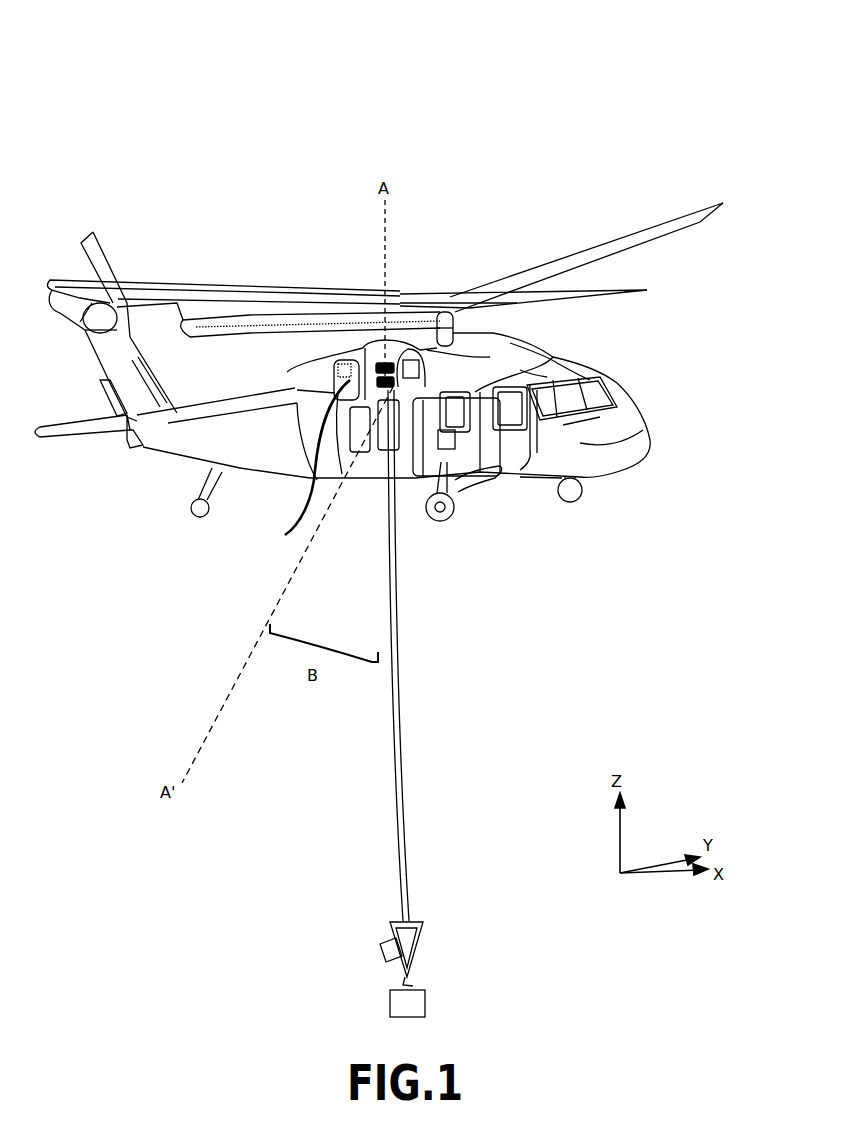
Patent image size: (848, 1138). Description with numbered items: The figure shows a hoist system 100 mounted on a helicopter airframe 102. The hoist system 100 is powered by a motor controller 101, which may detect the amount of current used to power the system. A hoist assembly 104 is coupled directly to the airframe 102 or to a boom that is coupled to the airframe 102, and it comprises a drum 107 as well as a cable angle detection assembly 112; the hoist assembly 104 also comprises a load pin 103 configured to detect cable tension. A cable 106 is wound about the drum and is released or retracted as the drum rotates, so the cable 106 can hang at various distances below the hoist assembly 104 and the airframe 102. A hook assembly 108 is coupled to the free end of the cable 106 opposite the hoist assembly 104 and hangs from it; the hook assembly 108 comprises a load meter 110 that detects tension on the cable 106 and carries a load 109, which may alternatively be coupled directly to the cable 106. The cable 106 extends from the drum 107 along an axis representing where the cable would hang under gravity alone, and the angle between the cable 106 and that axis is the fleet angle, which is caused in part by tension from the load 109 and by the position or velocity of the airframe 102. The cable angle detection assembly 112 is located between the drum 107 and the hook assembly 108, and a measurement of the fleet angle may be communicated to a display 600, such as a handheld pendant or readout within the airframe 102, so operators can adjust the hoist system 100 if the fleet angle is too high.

The hoist system 100 is at (97, 118).
The motor controller 101 is at (333, 368).
The airframe 102 is at (553, 355).
The load pin 103 is at (420, 367).
The hoist assembly 104 is at (302, 471).
The cable 106 is at (403, 657).
The drum 107 is at (378, 364).
The hook assembly 108 is at (423, 925).
The load 109 is at (420, 1005).
The load meter 110 is at (378, 953).
The cable angle detection assembly 112 is at (383, 382).
The display 600 is at (455, 440).